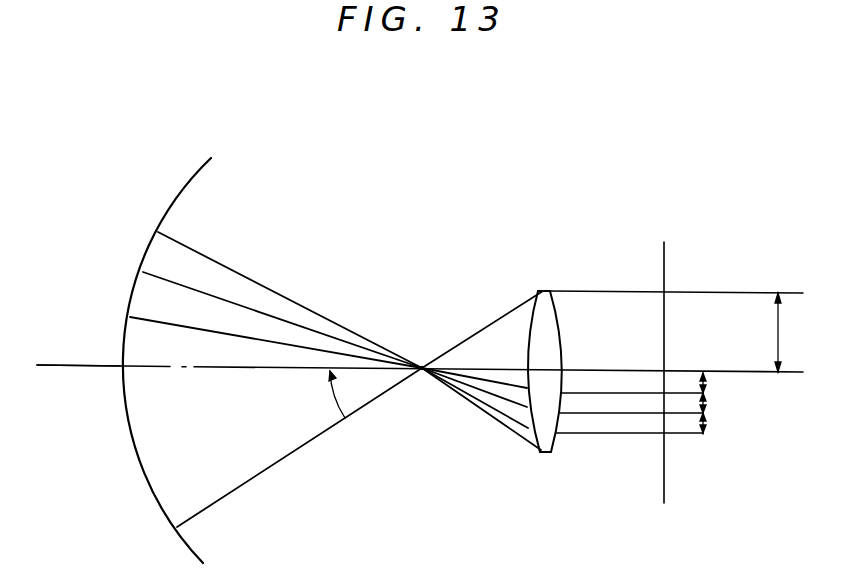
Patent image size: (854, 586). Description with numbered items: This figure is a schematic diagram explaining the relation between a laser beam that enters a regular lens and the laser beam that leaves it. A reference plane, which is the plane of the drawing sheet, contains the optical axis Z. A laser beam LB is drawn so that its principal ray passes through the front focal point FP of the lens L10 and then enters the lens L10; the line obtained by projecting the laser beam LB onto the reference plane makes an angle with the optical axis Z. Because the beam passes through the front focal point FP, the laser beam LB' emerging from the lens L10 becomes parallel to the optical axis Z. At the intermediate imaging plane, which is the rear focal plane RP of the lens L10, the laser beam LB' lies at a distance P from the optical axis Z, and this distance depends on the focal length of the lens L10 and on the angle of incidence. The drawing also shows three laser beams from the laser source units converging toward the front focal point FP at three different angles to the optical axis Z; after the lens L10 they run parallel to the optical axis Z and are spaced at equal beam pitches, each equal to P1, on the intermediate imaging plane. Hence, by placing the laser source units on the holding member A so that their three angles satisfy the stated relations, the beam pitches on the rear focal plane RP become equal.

The holding member A is at (190, 548).
The optical axis Z is at (52, 367).
The laser beam LB is at (360, 409).
The front focal point FP is at (424, 373).
The lens L10 is at (545, 445).
The laser beam LB' is at (676, 314).
The rear focal plane RP is at (662, 482).
The distance P is at (788, 332).
The distance P1 is at (705, 384).